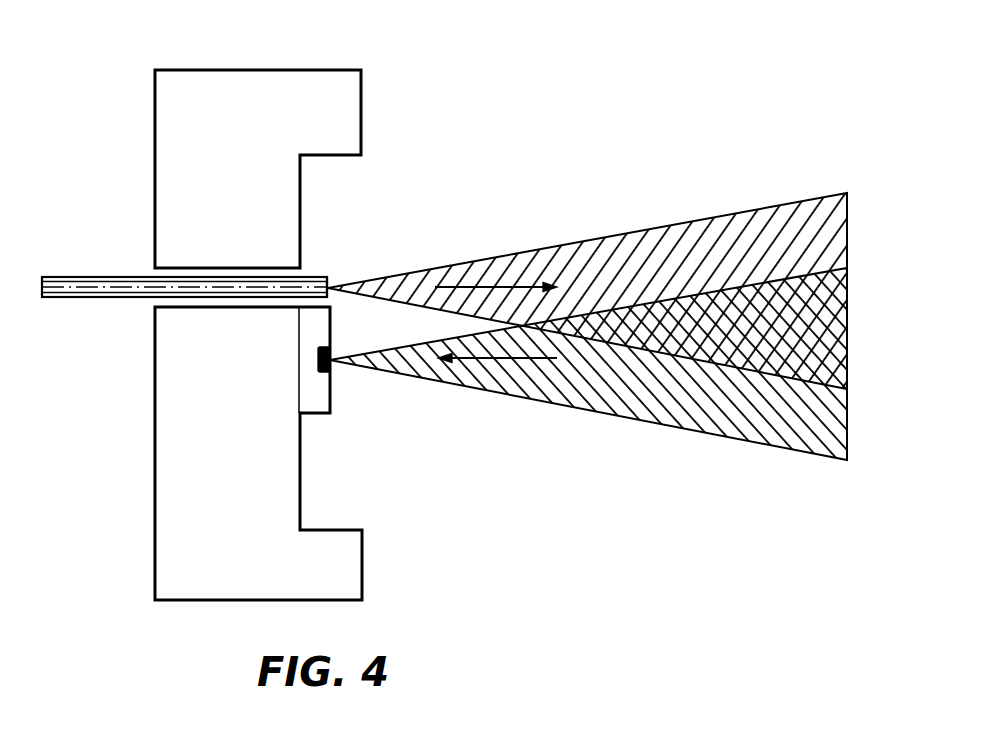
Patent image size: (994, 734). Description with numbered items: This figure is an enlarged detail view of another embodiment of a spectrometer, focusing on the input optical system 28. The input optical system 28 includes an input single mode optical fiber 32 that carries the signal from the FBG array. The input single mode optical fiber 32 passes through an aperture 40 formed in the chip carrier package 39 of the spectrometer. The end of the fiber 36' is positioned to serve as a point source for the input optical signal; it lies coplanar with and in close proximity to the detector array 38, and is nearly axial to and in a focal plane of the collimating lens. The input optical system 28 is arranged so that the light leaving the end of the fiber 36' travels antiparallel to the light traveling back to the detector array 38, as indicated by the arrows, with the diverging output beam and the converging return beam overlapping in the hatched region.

The input optical system 28 is at (392, 63).
The chip carrier package 39 is at (361, 117).
The aperture 40 is at (148, 304).
The input single mode optical fiber 32 is at (93, 277).
The end of the fiber 36' is at (587, 291).
The detector array 38 is at (333, 383).